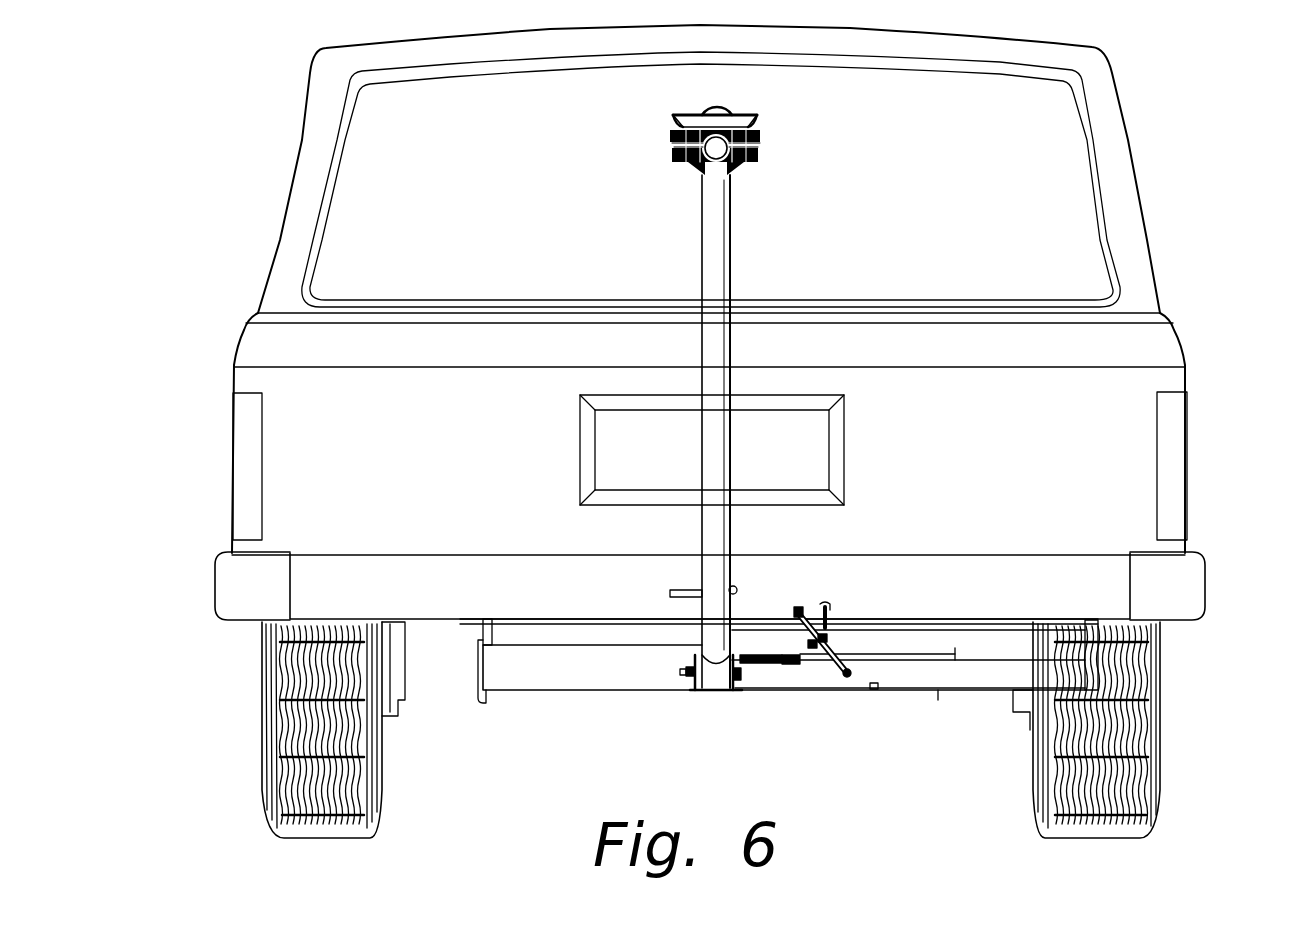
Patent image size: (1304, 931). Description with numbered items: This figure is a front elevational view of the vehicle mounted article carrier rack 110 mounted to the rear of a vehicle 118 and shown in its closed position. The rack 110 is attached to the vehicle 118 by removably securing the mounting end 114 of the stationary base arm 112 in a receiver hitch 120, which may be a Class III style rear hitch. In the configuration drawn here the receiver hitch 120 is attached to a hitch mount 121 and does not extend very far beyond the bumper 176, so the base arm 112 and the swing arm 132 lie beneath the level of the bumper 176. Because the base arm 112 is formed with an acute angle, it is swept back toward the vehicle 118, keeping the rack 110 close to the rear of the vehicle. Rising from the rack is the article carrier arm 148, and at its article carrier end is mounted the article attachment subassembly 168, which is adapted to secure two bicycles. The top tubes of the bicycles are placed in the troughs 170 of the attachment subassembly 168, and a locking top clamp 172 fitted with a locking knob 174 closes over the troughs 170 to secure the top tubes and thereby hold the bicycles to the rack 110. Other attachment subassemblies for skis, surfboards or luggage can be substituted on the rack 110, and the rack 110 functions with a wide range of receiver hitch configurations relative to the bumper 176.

The rack 110 is at (833, 743).
The base arm 112 is at (910, 682).
The mounting end 114 is at (755, 682).
The vehicle 118 is at (1183, 182).
The receiver hitch 120 is at (698, 683).
The hitch mount 121 is at (543, 668).
The swing arm 132 is at (875, 640).
The article carrier arm 148 is at (722, 238).
The article attachment subassembly 168 is at (650, 140).
The troughs 170 is at (762, 143).
The locking top clamp 172 is at (693, 124).
The locking knob 174 is at (727, 104).
The bumper 176 is at (1190, 597).